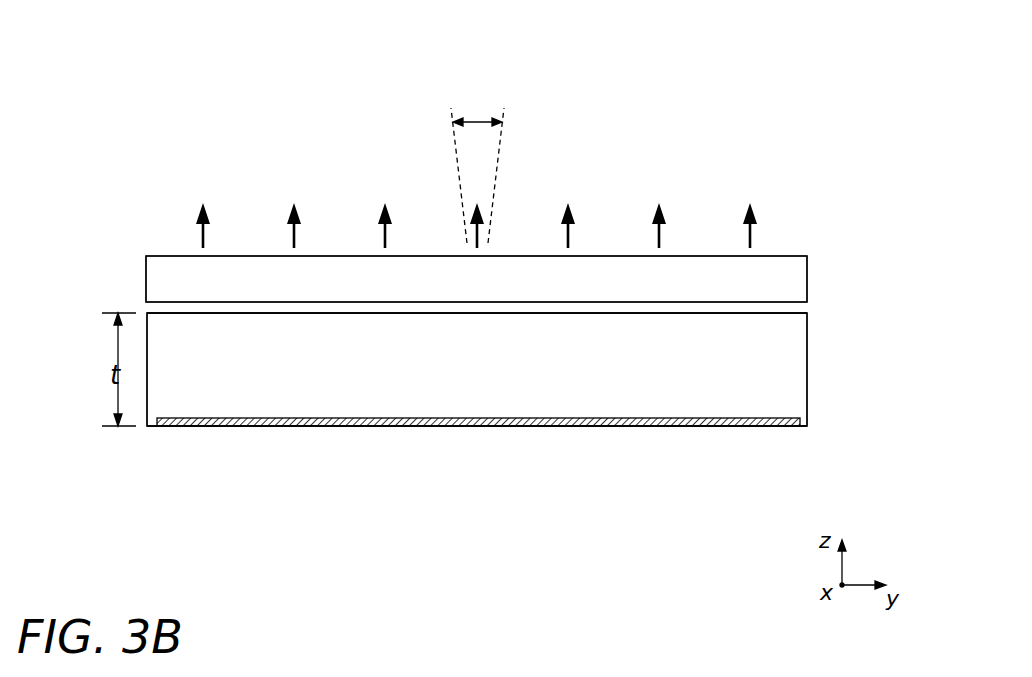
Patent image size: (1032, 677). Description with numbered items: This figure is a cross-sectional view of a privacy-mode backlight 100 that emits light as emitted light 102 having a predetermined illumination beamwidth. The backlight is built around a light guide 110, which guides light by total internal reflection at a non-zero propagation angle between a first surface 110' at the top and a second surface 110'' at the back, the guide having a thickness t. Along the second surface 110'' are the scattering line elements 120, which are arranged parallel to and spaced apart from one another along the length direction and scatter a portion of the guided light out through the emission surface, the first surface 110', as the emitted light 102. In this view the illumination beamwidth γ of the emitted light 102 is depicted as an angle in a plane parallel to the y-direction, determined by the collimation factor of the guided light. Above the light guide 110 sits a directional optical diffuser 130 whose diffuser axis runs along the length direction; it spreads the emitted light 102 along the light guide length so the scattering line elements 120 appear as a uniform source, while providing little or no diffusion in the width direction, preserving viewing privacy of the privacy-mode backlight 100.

The privacy-mode backlight 100 is at (783, 224).
The emitted light 102 is at (497, 222).
The light guide 110 is at (532, 369).
The first surface 110' is at (527, 330).
The second surface 110'' is at (531, 410).
The scattering line elements 120 is at (738, 441).
The directional optical diffuser 130 is at (808, 278).